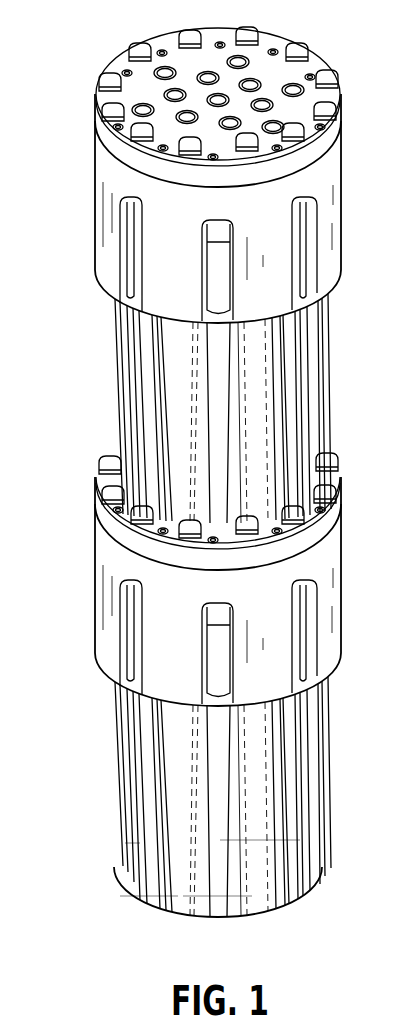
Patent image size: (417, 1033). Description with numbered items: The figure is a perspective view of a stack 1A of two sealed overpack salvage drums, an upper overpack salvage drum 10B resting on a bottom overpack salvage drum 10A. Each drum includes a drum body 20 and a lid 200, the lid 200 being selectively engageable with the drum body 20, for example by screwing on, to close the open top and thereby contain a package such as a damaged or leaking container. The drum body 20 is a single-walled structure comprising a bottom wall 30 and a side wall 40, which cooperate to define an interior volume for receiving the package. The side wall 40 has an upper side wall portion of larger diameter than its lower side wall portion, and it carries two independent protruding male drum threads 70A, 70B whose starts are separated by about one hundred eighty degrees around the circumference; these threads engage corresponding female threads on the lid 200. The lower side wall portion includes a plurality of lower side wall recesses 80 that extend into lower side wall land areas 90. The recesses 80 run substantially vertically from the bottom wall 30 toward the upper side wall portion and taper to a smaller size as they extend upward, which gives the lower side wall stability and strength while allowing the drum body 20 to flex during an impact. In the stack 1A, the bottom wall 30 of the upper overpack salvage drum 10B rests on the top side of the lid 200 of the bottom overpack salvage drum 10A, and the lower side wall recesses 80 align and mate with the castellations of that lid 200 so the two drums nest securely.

The stack 1A is at (60, 204).
The upper overpack salvage drum 10B is at (377, 198).
The bottom overpack salvage drum 10A is at (370, 733).
The lid 200 is at (340, 123).
The male drum thread 70B is at (256, 208).
The male drum thread 70A is at (256, 481).
The side wall 40 is at (170, 403).
The drum body 20 is at (260, 392).
The lower side wall land areas 90 is at (145, 842).
The bottom wall 30 is at (260, 914).
The lower side wall recesses 80 is at (250, 916).